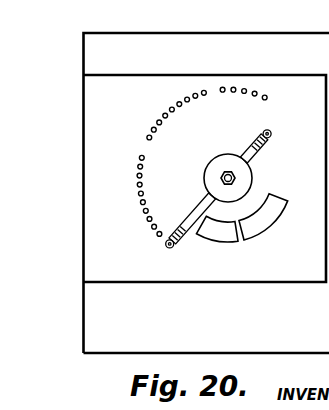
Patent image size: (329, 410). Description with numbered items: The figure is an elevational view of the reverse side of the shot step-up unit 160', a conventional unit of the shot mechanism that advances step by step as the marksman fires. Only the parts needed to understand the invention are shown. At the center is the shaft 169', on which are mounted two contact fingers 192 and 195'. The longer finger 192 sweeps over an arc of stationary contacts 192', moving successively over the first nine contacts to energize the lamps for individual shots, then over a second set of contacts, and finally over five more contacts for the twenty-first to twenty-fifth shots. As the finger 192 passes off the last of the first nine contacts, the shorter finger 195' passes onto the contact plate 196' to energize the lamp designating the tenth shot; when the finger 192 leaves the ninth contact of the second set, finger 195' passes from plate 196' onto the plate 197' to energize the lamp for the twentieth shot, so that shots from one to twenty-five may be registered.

The shot step-up unit 160' is at (178, 193).
The stationary contacts 192' is at (182, 162).
The contact finger 192 is at (187, 220).
The contact finger 195' is at (239, 144).
The shaft 169' is at (253, 178).
The contact plate 196' is at (279, 217).
The contact plate 197' is at (218, 243).